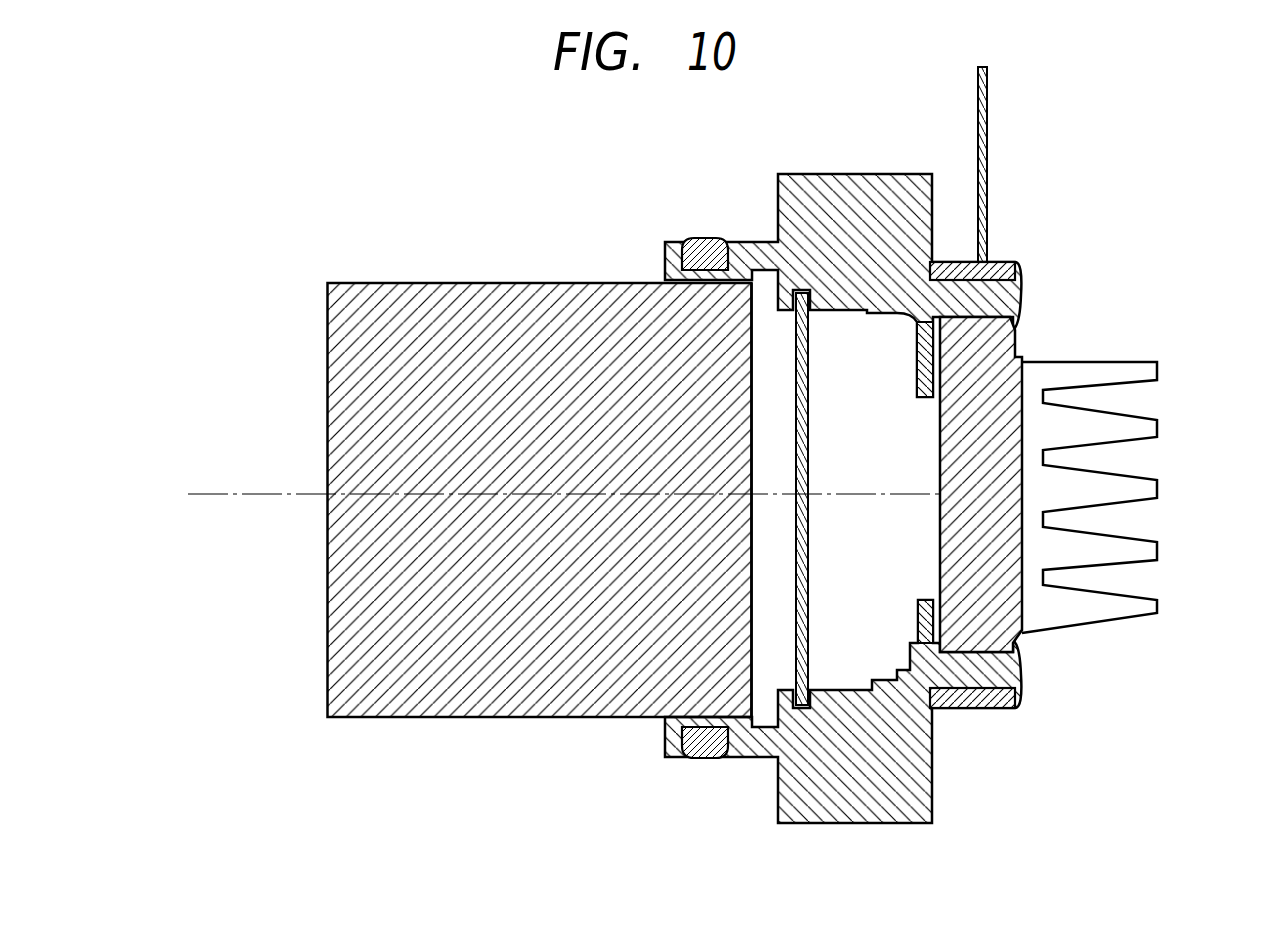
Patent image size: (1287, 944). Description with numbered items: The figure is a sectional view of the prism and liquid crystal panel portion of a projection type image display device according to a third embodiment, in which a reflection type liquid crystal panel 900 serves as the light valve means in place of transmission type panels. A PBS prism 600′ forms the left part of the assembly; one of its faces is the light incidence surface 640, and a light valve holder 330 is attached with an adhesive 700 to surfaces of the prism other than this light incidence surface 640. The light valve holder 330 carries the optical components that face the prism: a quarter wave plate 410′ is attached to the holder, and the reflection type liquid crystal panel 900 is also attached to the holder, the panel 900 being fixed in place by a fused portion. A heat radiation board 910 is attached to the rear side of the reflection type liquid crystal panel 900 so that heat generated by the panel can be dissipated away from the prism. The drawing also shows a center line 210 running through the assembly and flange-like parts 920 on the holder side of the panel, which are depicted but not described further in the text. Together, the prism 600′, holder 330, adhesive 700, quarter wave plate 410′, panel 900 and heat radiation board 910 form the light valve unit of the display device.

The optical axis 210 is at (260, 495).
The light valve holder 330 is at (877, 200).
The quarter wave plate 410′ is at (810, 542).
The PBS prism 600′ is at (463, 645).
The light incidence surface 640 is at (753, 580).
The adhesive 700 is at (698, 242).
The reflection type liquid crystal panel 900 is at (1000, 543).
The heat radiation board 910 is at (1107, 410).
The mounting plate 920 is at (1018, 290).